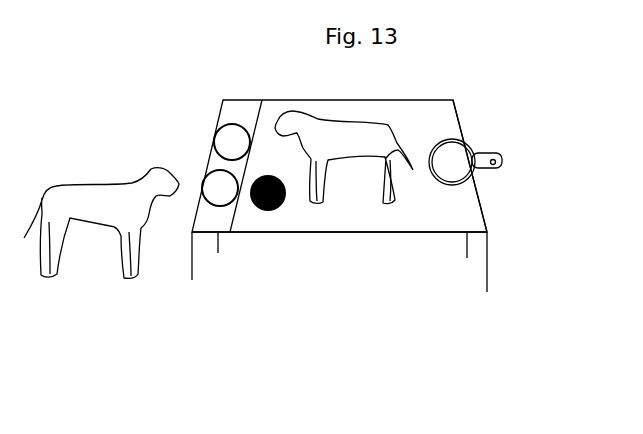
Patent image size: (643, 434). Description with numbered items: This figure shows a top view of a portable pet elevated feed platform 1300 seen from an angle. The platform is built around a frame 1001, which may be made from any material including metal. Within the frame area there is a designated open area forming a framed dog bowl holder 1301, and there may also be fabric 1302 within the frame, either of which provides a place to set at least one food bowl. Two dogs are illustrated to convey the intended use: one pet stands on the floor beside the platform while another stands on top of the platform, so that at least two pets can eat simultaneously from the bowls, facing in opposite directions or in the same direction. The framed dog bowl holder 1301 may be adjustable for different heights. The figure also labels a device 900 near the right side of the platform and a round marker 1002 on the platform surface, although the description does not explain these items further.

The portable pet elevated feed platform 1300 is at (215, 100).
The framed dog bowl holder 1301 is at (215, 141).
The fabric 1302 is at (432, 202).
The handheld scanning device 900 is at (478, 175).
The filled circular marker 1002 is at (272, 220).
The frame 1001 is at (378, 230).